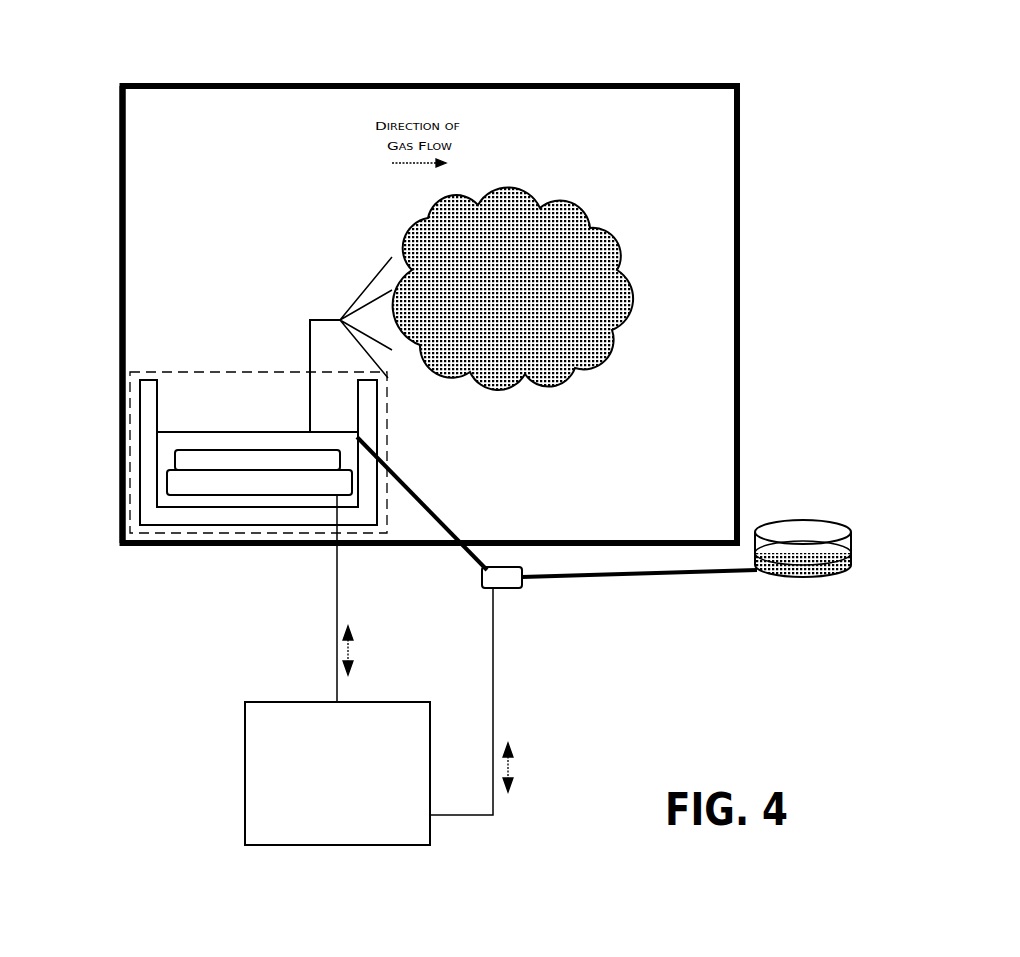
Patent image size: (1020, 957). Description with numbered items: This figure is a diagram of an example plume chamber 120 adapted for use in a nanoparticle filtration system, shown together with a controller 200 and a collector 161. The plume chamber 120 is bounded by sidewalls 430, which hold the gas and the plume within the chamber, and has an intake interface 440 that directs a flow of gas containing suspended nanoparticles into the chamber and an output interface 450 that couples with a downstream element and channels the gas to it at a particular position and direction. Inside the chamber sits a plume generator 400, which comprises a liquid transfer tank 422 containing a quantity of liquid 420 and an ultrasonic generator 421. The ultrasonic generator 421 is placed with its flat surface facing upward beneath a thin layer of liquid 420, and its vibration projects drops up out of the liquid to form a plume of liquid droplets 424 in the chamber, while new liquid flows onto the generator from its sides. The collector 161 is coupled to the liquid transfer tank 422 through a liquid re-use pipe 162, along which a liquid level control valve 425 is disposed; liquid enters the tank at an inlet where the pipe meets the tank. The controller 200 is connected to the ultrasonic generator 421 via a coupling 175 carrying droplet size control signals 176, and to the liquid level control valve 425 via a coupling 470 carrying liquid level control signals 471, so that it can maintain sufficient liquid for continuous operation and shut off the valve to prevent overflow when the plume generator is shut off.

The plume chamber 120 is at (713, 122).
The sidewalls 430 is at (257, 83).
The intake interface 440 is at (122, 193).
The output interface 450 is at (739, 185).
The plume generator 400 is at (275, 370).
The plume of liquid droplets 424 is at (513, 288).
The liquid 420 is at (322, 430).
The ultrasonic generator 421 is at (320, 447).
The liquid transfer tank 422 is at (244, 522).
The liquid re-use pipe 162 is at (557, 535).
The liquid level control valve 425 is at (503, 580).
The collector 161 is at (806, 578).
The coupling 175 is at (301, 598).
The droplet size control signals 176 is at (397, 653).
The controller 200 is at (357, 799).
The coupling 470 is at (485, 720).
The liquid level control signals 471 is at (555, 770).